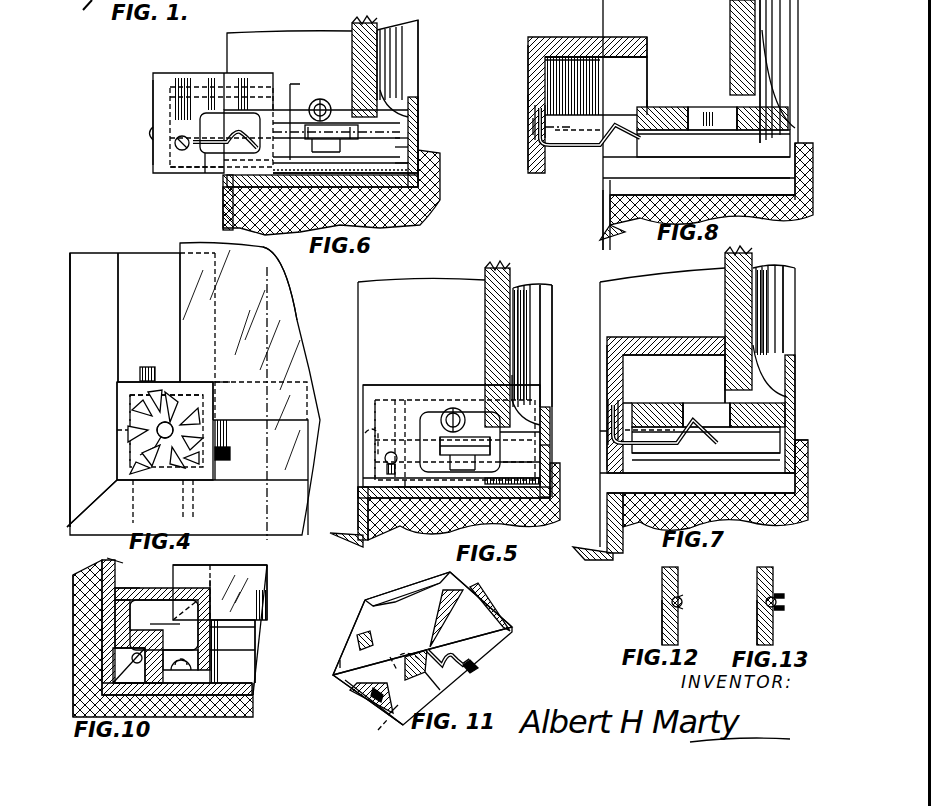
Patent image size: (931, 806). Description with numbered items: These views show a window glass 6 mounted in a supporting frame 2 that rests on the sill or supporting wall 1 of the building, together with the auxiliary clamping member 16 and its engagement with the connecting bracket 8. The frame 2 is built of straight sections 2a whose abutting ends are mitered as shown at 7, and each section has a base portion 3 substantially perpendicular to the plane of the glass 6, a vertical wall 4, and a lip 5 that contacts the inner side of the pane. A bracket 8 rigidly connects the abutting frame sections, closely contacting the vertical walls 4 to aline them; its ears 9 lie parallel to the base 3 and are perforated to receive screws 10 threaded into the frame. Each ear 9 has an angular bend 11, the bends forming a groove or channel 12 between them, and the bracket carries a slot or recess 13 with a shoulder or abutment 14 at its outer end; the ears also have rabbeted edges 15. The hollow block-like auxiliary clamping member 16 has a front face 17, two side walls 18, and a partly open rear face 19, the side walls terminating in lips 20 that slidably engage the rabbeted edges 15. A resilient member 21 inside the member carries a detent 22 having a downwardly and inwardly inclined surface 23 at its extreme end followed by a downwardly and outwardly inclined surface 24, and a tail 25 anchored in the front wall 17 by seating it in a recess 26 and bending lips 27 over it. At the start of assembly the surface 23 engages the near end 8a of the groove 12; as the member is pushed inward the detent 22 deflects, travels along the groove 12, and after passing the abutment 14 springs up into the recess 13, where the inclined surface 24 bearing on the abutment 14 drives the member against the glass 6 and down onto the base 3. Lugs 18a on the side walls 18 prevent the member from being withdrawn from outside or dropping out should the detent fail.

In FIG. 6, the sill or supporting wall 1 is at (433, 195).
In FIG. 8, the sill or supporting wall 1 is at (790, 212).
In FIG. 5, the sill or supporting wall 1 is at (556, 522).
In FIG. 7, the sill or supporting wall 1 is at (806, 512).
In FIG. 6, the frame 2 is at (222, 207).
In FIG. 8, the frame 2 is at (603, 215).
In FIG. 4, the frame 2 is at (69, 430).
In FIG. 5, the frame 2 is at (357, 505).
In FIG. 7, the frame 2 is at (770, 512).
In FIG. 6, the straight sections 2a is at (418, 44).
In FIG. 8, the straight sections 2a is at (800, 40).
In FIG. 4, the straight sections 2a is at (76, 250).
In FIG. 7, the straight sections 2a is at (797, 303).
In FIG. 10, the straight sections 2a is at (74, 586).
In FIG. 6, the base portion 3 is at (298, 200).
In FIG. 8, the base portion 3 is at (645, 210).
In FIG. 4, the base portion 3 is at (120, 252).
In FIG. 5, the base portion 3 is at (472, 508).
In FIG. 7, the base portion 3 is at (632, 520).
In FIG. 10, the base portion 3 is at (252, 680).
In FIG. 6, the vertical wall 4 is at (410, 147).
In FIG. 8, the vertical wall 4 is at (800, 150).
In FIG. 4, the vertical wall 4 is at (148, 262).
In FIG. 5, the vertical wall 4 is at (541, 462).
In FIG. 7, the vertical wall 4 is at (796, 450).
In FIG. 10, the vertical wall 4 is at (256, 650).
In FIG. 6, the lip 5 is at (420, 80).
In FIG. 8, the lip 5 is at (792, 26).
In FIG. 4, the lip 5 is at (218, 285).
In FIG. 5, the lip 5 is at (542, 398).
In FIG. 7, the lip 5 is at (780, 336).
In FIG. 10, the lip 5 is at (270, 594).
In FIG. 6, the glass 6 is at (352, 33).
In FIG. 8, the glass 6 is at (730, 18).
In FIG. 4, the glass 6 is at (284, 320).
In FIG. 5, the glass 6 is at (497, 266).
In FIG. 7, the glass 6 is at (724, 290).
In FIG. 8, the mitered ends 7 is at (762, 215).
In FIG. 4, the mitered ends 7 is at (265, 356).
In FIG. 7, the mitered ends 7 is at (752, 512).
In FIG. 10, the mitered ends 7 is at (100, 690).
In FIG. 6, the bracket 8 is at (410, 163).
In FIG. 8, the bracket 8 is at (792, 112).
In FIG. 4, the bracket 8 is at (117, 432).
In FIG. 5, the bracket 8 is at (548, 480).
In FIG. 7, the bracket 8 is at (787, 414).
In FIG. 10, the bracket 8 is at (100, 652).
In FIG. 6, the near end of groove 8a is at (305, 84).
In FIG. 8, the near end of groove 8a is at (662, 106).
In FIG. 7, the near end of groove 8a is at (652, 402).
In FIG. 6, the ears 9 is at (272, 92).
In FIG. 4, the ears 9 is at (118, 420).
In FIG. 5, the ears 9 is at (552, 418).
In FIG. 7, the ears 9 is at (790, 414).
In FIG. 10, the ears 9 is at (100, 628).
In FIG. 6, the screws 10 is at (320, 98).
In FIG. 5, the screws 10 is at (453, 407).
In FIG. 10, the screws 10 is at (97, 610).
In FIG. 6, the angular bend 11 is at (400, 136).
In FIG. 8, the angular bend 11 is at (745, 188).
In FIG. 5, the angular bend 11 is at (541, 432).
In FIG. 7, the angular bend 11 is at (599, 431).
In FIG. 10, the angular bend 11 is at (143, 587).
In FIG. 6, the groove or channel 12 is at (290, 190).
In FIG. 8, the groove or channel 12 is at (648, 180).
In FIG. 4, the groove or channel 12 is at (135, 482).
In FIG. 7, the groove or channel 12 is at (660, 455).
In FIG. 10, the groove or channel 12 is at (100, 672).
In FIG. 6, the slot or recess 13 is at (338, 130).
In FIG. 8, the slot or recess 13 is at (720, 108).
In FIG. 5, the slot or recess 13 is at (466, 435).
In FIG. 7, the slot or recess 13 is at (734, 400).
In FIG. 10, the slot or recess 13 is at (218, 642).
In FIG. 6, the shoulder or abutment 14 is at (312, 125).
In FIG. 8, the shoulder or abutment 14 is at (708, 108).
In FIG. 5, the shoulder or abutment 14 is at (434, 410).
In FIG. 7, the shoulder or abutment 14 is at (720, 453).
In FIG. 6, the rabbeted edges 15 is at (263, 160).
In FIG. 4, the rabbeted edges 15 is at (120, 395).
In FIG. 5, the rabbeted edges 15 is at (396, 400).
In FIG. 10, the rabbeted edges 15 is at (122, 587).
In FIG. 6, the auxiliary clamping member 16 is at (176, 72).
In FIG. 8, the auxiliary clamping member 16 is at (527, 50).
In FIG. 4, the auxiliary clamping member 16 is at (215, 393).
In FIG. 5, the auxiliary clamping member 16 is at (556, 358).
In FIG. 7, the auxiliary clamping member 16 is at (606, 352).
In FIG. 10, the auxiliary clamping member 16 is at (222, 585).
In FIG. 11, the auxiliary clamping member 16 is at (352, 617).
In FIG. 12, the auxiliary clamping member 16 is at (661, 628).
In FIG. 13, the auxiliary clamping member 16 is at (756, 627).
In FIG. 6, the front face 17 is at (152, 98).
In FIG. 8, the front face 17 is at (527, 80).
In FIG. 4, the front face 17 is at (228, 383).
In FIG. 5, the front face 17 is at (556, 375).
In FIG. 7, the front face 17 is at (606, 373).
In FIG. 11, the front face 17 is at (345, 690).
In FIG. 12, the front face 17 is at (661, 588).
In FIG. 13, the front face 17 is at (756, 588).
In FIG. 6, the side walls 18 is at (152, 85).
In FIG. 8, the side walls 18 is at (570, 36).
In FIG. 4, the side walls 18 is at (192, 382).
In FIG. 5, the side walls 18 is at (375, 384).
In FIG. 7, the side walls 18 is at (636, 336).
In FIG. 10, the side walls 18 is at (176, 581).
In FIG. 11, the side walls 18 is at (397, 598).
In FIG. 6, the lug or projection 18a is at (160, 146).
In FIG. 4, the lug or projection 18a is at (148, 364).
In FIG. 5, the lug or projection 18a is at (388, 462).
In FIG. 11, the lug or projection 18a is at (355, 640).
In FIG. 6, the rear face 19 is at (256, 86).
In FIG. 8, the rear face 19 is at (648, 36).
In FIG. 5, the rear face 19 is at (514, 373).
In FIG. 7, the rear face 19 is at (722, 330).
In FIG. 11, the rear face 19 is at (514, 617).
In FIG. 6, the lips 20 is at (205, 166).
In FIG. 8, the lips 20 is at (575, 56).
In FIG. 4, the lips 20 is at (118, 410).
In FIG. 5, the lips 20 is at (410, 500).
In FIG. 10, the lips 20 is at (105, 575).
In FIG. 11, the lips 20 is at (430, 645).
In FIG. 6, the resilient member 21 is at (211, 160).
In FIG. 8, the resilient member 21 is at (578, 180).
In FIG. 4, the resilient member 21 is at (133, 456).
In FIG. 5, the resilient member 21 is at (405, 490).
In FIG. 7, the resilient member 21 is at (645, 478).
In FIG. 10, the resilient member 21 is at (138, 696).
In FIG. 11, the resilient member 21 is at (440, 690).
In FIG. 6, the detent 22 is at (235, 130).
In FIG. 8, the detent 22 is at (615, 116).
In FIG. 5, the detent 22 is at (496, 480).
In FIG. 7, the detent 22 is at (692, 413).
In FIG. 10, the detent 22 is at (158, 624).
In FIG. 11, the detent 22 is at (449, 646).
In FIG. 8, the downwardly and inwardly inclined surface 23 is at (650, 98).
In FIG. 7, the downwardly and inwardly inclined surface 23 is at (717, 418).
In FIG. 11, the downwardly and inwardly inclined surface 23 is at (472, 661).
In FIG. 8, the downwardly and outwardly inclined surface 24 is at (590, 123).
In FIG. 7, the downwardly and outwardly inclined surface 24 is at (668, 420).
In FIG. 11, the downwardly and outwardly inclined surface 24 is at (423, 655).
In FIG. 6, the tail 25 is at (152, 128).
In FIG. 8, the tail 25 is at (533, 132).
In FIG. 4, the tail 25 is at (232, 450).
In FIG. 5, the tail 25 is at (553, 448).
In FIG. 7, the tail 25 is at (612, 438).
In FIG. 11, the tail 25 is at (372, 692).
In FIG. 12, the tail 25 is at (672, 602).
In FIG. 13, the tail 25 is at (767, 603).
In FIG. 8, the recess 26 is at (533, 118).
In FIG. 11, the recess 26 is at (390, 716).
In FIG. 8, the lips 27 is at (527, 97).
In FIG. 11, the lips 27 is at (340, 663).
In FIG. 12, the lips 27 is at (682, 598).
In FIG. 13, the lips 27 is at (784, 596).